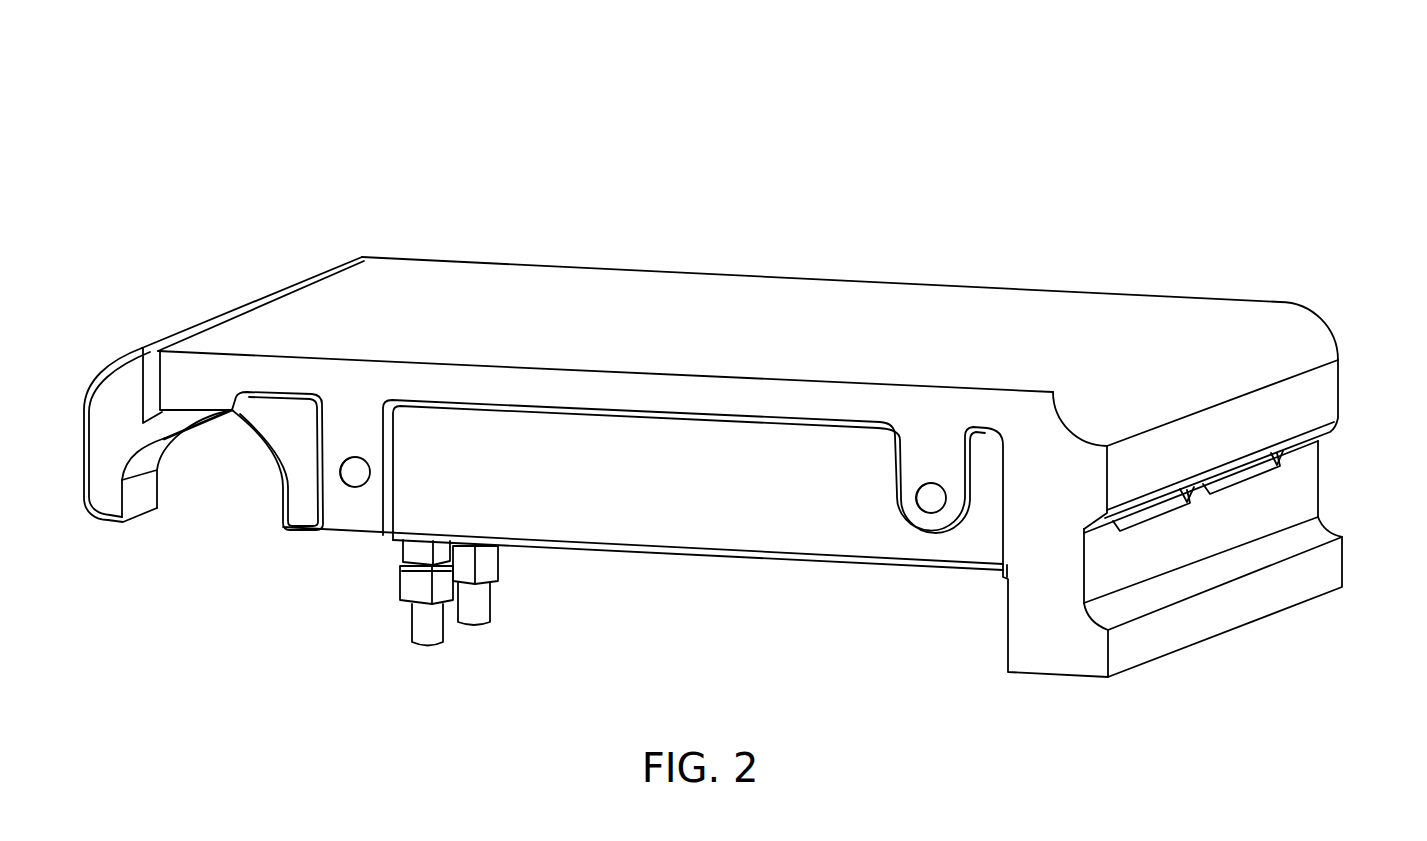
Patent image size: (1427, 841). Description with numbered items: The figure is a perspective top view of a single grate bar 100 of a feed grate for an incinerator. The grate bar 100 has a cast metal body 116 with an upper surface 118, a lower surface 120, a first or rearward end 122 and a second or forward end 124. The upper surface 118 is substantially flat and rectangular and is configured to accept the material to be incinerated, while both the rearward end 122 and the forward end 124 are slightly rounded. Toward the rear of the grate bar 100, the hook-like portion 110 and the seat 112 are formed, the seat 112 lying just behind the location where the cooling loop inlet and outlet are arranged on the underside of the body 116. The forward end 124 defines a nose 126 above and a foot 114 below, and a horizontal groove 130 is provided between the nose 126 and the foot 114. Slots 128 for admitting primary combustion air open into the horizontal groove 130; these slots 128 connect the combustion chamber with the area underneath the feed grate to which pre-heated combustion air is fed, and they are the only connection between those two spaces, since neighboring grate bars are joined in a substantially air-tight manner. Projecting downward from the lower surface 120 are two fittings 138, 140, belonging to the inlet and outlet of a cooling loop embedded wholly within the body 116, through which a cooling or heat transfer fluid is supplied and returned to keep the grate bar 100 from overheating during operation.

The grate bar 100 is at (1041, 95).
The hook portion 110 is at (190, 504).
The seat 112 is at (252, 438).
The foot 114 is at (1275, 604).
The cast metal body 116 is at (873, 265).
The upper surface 118 is at (531, 285).
The lower surface 120 is at (714, 558).
The rearward end 122 is at (216, 296).
The forward end 124 is at (1291, 337).
The nose 126 is at (1198, 355).
The slots 128 is at (1232, 487).
The horizontal groove 130 is at (1321, 484).
The fitting 138 is at (478, 627).
The fitting 140 is at (422, 636).